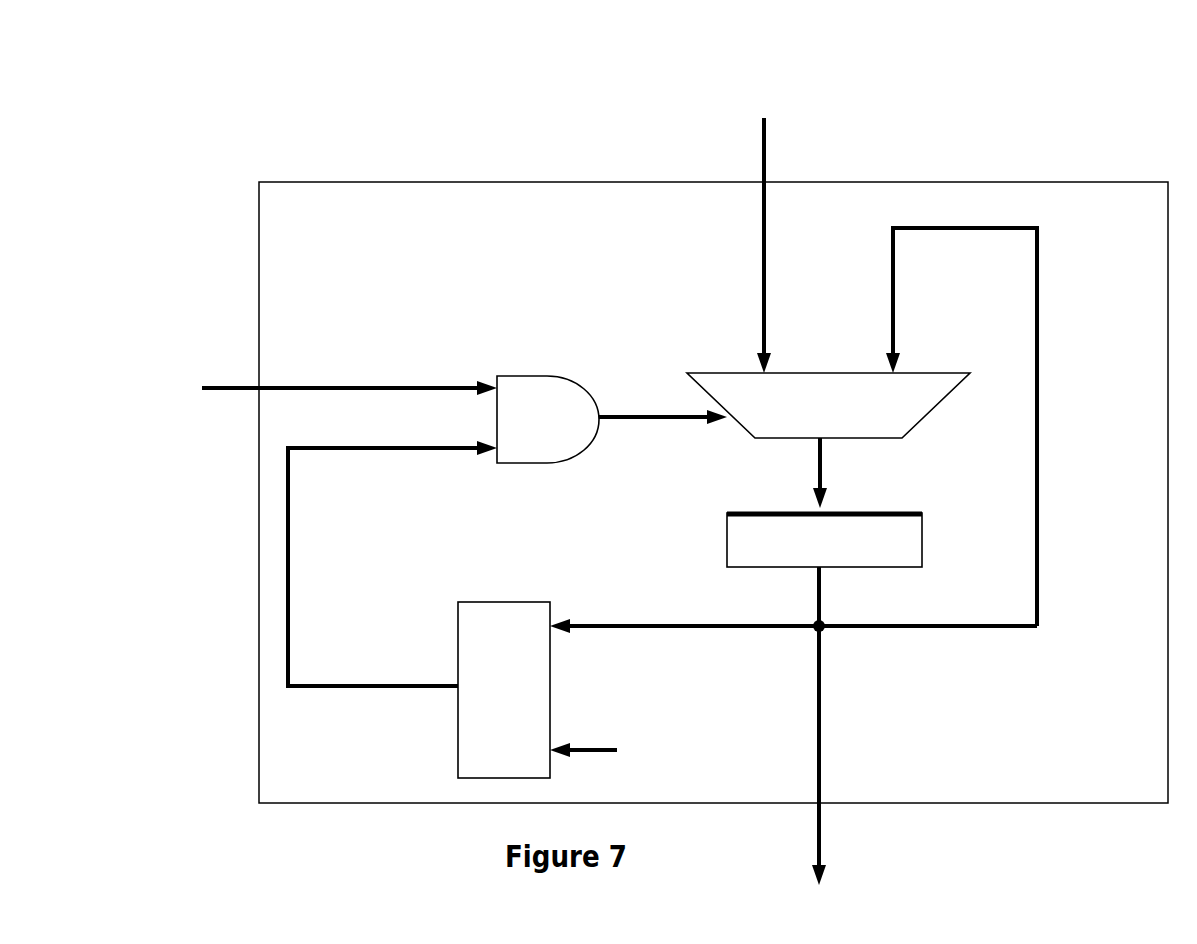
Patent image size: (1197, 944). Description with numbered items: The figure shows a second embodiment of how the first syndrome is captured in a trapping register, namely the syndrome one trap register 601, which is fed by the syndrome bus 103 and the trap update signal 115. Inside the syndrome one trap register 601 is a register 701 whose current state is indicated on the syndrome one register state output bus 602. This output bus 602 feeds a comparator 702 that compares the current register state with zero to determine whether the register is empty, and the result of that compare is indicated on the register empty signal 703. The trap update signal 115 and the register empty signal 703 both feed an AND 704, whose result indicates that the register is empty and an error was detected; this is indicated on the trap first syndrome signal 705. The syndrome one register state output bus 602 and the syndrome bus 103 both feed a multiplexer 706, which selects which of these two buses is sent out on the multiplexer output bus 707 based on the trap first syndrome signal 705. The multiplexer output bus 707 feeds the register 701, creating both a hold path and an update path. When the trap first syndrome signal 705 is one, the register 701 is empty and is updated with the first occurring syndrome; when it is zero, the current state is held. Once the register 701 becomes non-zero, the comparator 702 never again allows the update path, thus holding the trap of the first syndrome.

The syndrome one trap register 601 is at (318, 245).
The syndrome bus 103 is at (765, 137).
The trap update signal 115 is at (232, 385).
The AND 704 is at (545, 390).
The trap first syndrome signal 705 is at (653, 408).
The multiplexer 706 is at (773, 429).
The multiplexer output bus 707 is at (808, 463).
The register 701 is at (741, 537).
The comparator 702 is at (467, 625).
The register empty signal 703 is at (296, 566).
The syndrome one register state output bus 602 is at (825, 636).